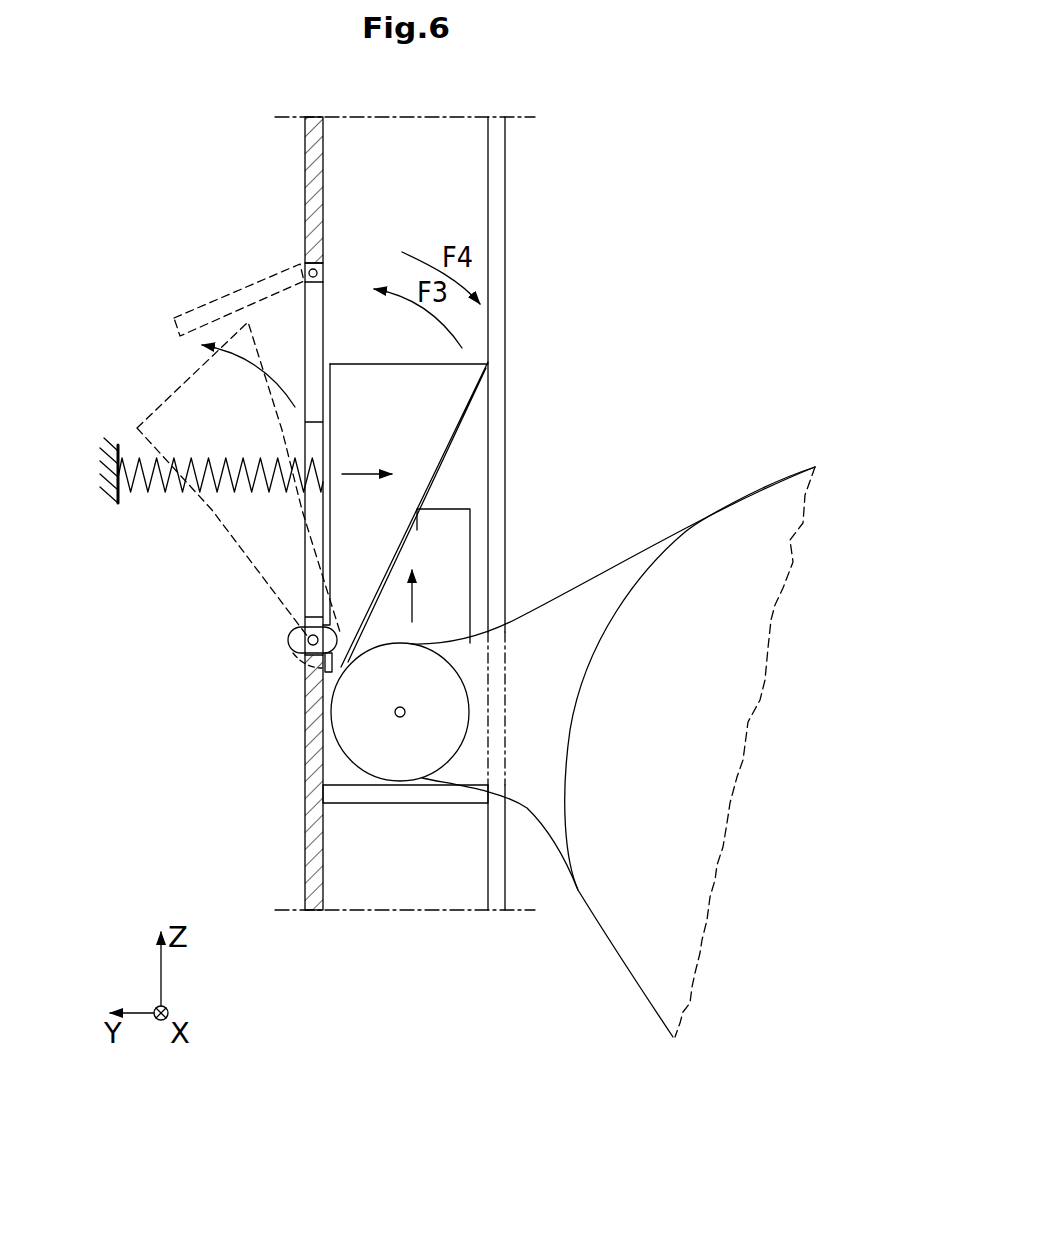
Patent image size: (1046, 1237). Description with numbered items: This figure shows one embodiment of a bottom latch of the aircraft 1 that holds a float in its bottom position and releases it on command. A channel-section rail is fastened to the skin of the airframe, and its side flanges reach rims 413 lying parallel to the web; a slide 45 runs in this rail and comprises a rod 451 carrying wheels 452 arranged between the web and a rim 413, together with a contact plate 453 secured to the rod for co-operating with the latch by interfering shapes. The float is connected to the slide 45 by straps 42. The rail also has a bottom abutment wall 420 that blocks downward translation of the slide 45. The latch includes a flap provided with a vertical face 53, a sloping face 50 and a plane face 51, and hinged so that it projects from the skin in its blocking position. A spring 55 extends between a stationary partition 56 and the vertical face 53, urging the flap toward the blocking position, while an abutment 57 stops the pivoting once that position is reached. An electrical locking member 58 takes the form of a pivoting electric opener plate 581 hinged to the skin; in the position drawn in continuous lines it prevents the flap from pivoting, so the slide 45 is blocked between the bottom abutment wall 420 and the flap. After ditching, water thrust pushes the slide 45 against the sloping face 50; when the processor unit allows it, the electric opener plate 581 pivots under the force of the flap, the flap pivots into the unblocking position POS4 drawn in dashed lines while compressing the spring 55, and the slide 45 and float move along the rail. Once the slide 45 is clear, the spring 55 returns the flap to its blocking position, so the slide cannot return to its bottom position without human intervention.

The aircraft 1 is at (744, 195).
The rim 413 is at (496, 160).
The electrical locking member 58 is at (330, 298).
The electric opener plate 581 is at (313, 318).
The abutment 57 is at (318, 656).
The plane face 51 is at (366, 364).
The vertical face 53 is at (330, 525).
The sloping face 50 is at (448, 428).
The contact plate 453 is at (462, 555).
The slide 45 is at (455, 761).
The wheel 452 is at (420, 685).
The rod 451 is at (407, 710).
The bottom abutment wall 420 is at (360, 803).
The strap 42 is at (613, 752).
The stationary partition 56 is at (116, 492).
The spring 55 is at (166, 494).
The unblocking position POS4 is at (232, 472).